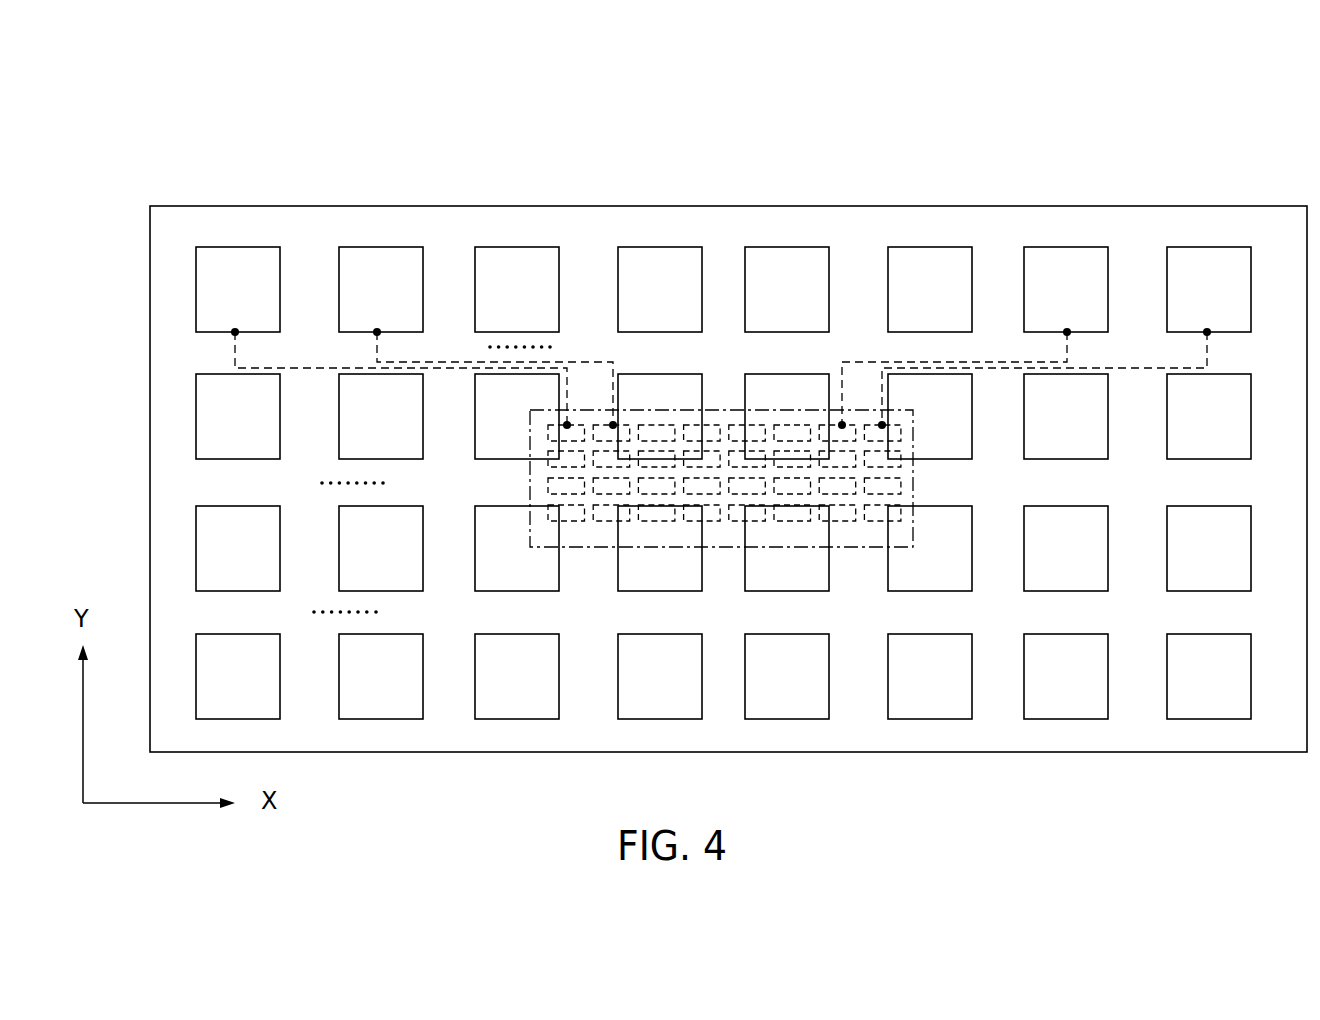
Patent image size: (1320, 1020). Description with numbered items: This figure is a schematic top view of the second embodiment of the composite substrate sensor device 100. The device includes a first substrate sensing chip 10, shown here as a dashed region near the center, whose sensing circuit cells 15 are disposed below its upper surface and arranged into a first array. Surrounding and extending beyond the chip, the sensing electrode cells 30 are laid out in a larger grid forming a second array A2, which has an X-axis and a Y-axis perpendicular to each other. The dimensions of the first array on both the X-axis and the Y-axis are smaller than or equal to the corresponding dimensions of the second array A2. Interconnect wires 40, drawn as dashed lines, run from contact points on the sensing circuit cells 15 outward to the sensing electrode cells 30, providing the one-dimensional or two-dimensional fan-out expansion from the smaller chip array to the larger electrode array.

The composite substrate sensor device 100 is at (939, 150).
The second array A2 is at (1050, 206).
The sensing electrode cells 30 is at (237, 268).
The interconnect wires 40 is at (312, 368).
The sensing circuit cells 15 is at (567, 425).
The first substrate sensing chip 10 is at (724, 410).